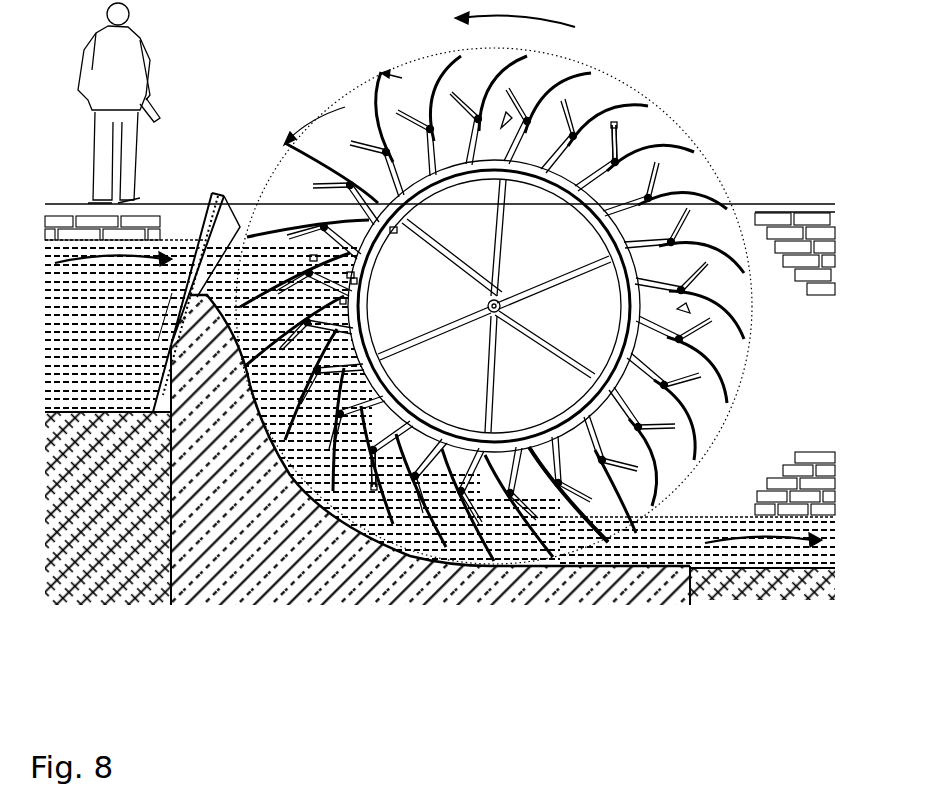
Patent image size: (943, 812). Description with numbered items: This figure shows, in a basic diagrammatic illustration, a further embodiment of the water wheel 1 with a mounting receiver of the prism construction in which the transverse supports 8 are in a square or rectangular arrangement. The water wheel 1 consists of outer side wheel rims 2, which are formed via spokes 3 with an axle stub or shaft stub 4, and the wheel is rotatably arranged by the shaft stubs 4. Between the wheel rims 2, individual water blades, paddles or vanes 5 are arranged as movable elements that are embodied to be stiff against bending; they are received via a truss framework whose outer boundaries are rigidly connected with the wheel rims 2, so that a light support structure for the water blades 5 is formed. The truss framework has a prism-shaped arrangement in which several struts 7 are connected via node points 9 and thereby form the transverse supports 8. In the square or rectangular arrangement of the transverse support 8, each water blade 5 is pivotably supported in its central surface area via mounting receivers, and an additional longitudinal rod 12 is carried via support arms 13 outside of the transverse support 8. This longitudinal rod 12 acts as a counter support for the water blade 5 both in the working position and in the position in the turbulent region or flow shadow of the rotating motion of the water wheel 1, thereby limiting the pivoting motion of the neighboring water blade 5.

The water wheel 1 is at (509, 341).
The wheel rim 2 is at (585, 212).
The spoke 3 is at (507, 245).
The shaft stub 4 is at (506, 316).
The water blade 5 is at (612, 163).
The strut 7 is at (313, 260).
The transverse support 8 is at (509, 118).
The node point 9 is at (353, 282).
The longitudinal rod 12 is at (560, 540).
The support arm 13 is at (617, 143).